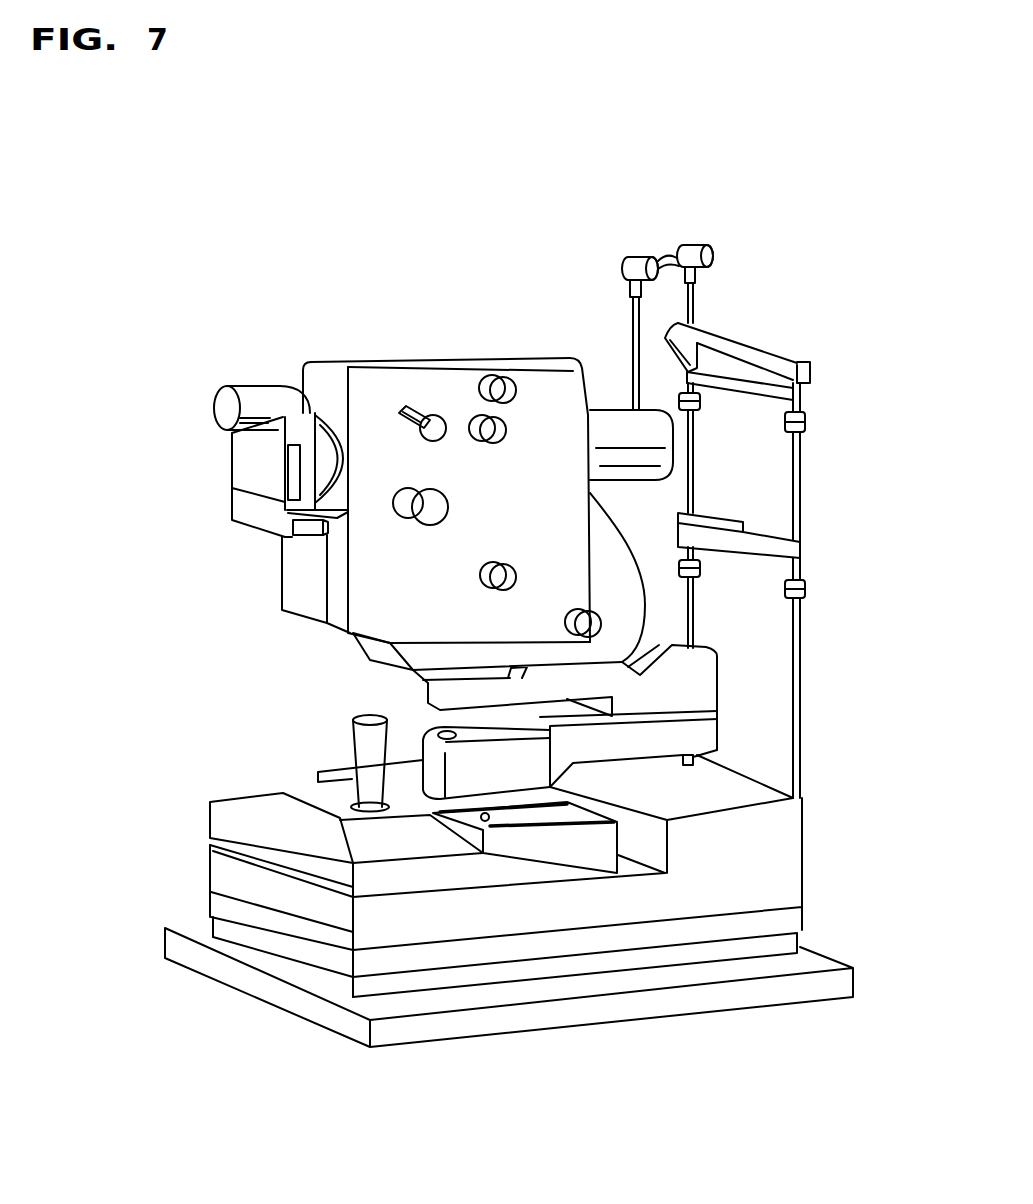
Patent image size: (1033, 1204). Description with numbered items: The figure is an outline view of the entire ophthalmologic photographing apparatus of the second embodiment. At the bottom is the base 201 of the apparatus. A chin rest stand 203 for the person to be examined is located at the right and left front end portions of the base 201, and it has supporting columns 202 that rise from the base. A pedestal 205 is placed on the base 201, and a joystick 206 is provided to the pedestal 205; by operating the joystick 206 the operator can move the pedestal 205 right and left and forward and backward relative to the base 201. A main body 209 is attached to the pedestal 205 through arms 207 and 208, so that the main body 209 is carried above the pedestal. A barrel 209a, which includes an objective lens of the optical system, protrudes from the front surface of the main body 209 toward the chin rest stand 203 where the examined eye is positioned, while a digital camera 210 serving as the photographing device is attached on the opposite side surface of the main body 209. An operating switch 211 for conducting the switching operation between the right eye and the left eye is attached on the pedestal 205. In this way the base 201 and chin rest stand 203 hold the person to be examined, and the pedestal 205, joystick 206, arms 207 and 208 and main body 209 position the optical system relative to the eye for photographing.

The base 201 is at (788, 865).
The supporting column 202 is at (803, 722).
The chin rest stand 203 is at (803, 589).
The pedestal 205 is at (210, 803).
The joystick 206 is at (352, 736).
The arm 207 is at (640, 735).
The arm 208 is at (704, 674).
The main body 209 is at (293, 619).
The barrel 209a is at (660, 453).
The digital camera 210 is at (240, 458).
The operating switch 211 is at (497, 823).